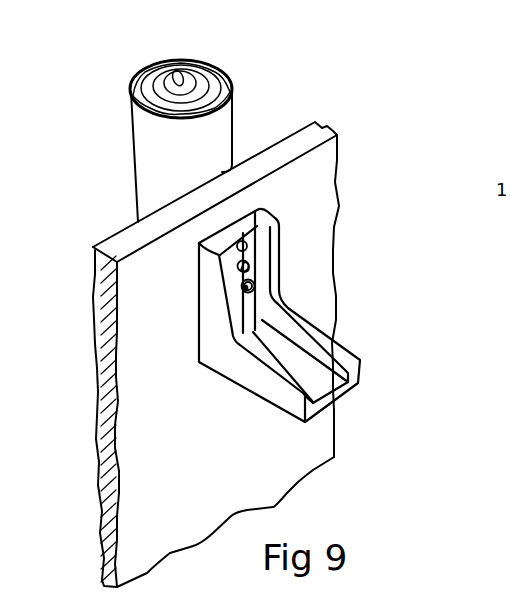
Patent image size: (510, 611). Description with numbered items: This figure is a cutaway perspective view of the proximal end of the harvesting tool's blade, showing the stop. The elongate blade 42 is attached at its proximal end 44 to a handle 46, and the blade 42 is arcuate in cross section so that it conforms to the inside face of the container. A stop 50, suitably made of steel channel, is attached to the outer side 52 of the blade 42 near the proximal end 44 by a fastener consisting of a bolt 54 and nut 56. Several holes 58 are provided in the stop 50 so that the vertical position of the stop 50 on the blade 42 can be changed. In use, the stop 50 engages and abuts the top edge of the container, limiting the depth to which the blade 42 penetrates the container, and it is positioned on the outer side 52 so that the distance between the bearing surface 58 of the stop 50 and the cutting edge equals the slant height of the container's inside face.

The elongate blade 42 is at (103, 550).
The proximal end 44 is at (284, 139).
The handle 46 is at (132, 148).
The stop 50 is at (198, 327).
The outer side 52 is at (130, 352).
The bolt 54 is at (252, 290).
The nut 56 is at (250, 262).
The holes 58 is at (247, 248).